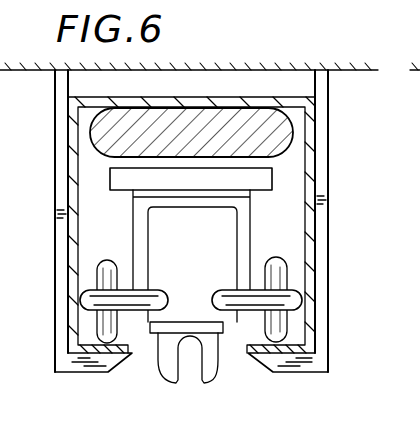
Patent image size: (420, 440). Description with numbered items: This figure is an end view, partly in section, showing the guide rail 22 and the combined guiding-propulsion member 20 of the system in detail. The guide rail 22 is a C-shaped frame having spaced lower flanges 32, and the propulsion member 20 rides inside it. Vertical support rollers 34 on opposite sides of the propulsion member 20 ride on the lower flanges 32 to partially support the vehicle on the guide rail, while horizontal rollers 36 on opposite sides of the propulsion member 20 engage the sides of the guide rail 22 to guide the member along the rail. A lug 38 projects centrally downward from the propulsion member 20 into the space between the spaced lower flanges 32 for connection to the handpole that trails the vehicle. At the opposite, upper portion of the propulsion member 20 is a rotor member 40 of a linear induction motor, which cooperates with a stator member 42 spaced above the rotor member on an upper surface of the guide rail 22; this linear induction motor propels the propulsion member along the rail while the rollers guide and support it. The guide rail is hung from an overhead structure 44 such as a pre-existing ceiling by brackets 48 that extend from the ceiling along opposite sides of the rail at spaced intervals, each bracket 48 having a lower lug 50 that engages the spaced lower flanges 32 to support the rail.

The combined guiding-propulsion member 20 is at (250, 227).
The guide rail 22 is at (112, 96).
The spaced lower flanges 32 is at (131, 350).
The vertical support rollers 34 is at (104, 260).
The horizontal rollers 36 is at (212, 300).
The lug 38 is at (178, 373).
The rotor member 40 is at (110, 182).
The stator member 42 is at (286, 156).
The overhead structure 44 is at (277, 69).
The brackets 48 is at (55, 213).
The lower lug 50 is at (82, 373).